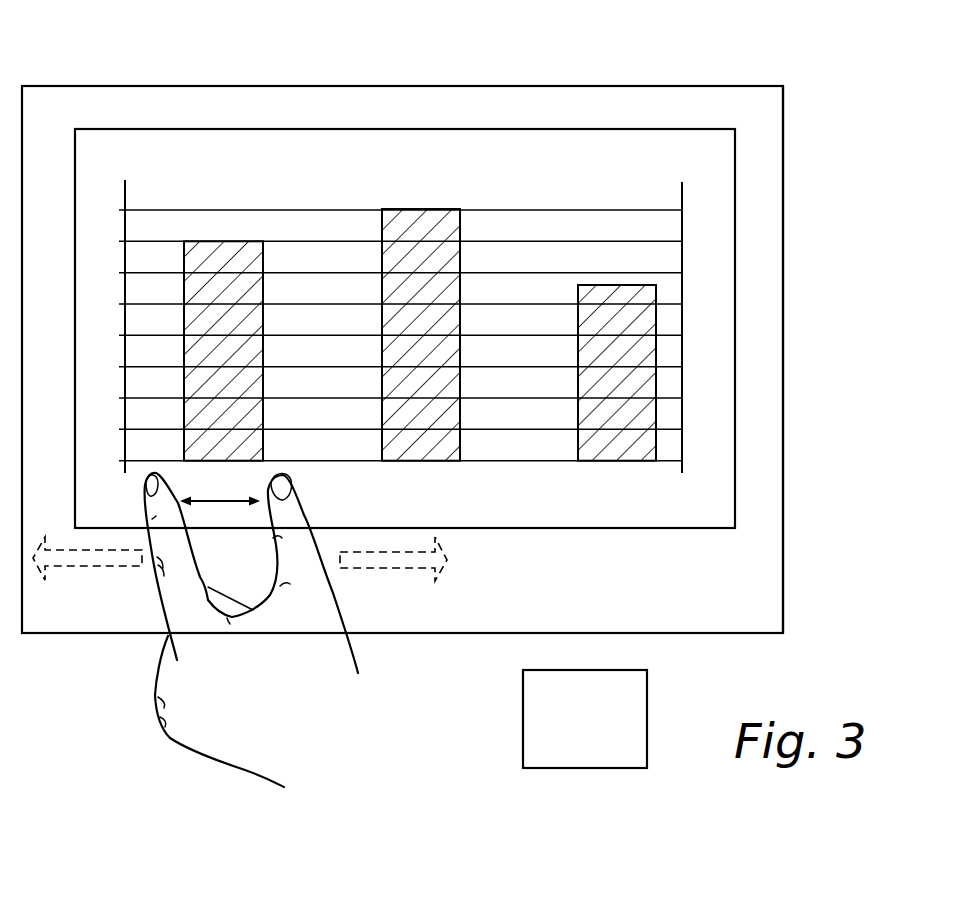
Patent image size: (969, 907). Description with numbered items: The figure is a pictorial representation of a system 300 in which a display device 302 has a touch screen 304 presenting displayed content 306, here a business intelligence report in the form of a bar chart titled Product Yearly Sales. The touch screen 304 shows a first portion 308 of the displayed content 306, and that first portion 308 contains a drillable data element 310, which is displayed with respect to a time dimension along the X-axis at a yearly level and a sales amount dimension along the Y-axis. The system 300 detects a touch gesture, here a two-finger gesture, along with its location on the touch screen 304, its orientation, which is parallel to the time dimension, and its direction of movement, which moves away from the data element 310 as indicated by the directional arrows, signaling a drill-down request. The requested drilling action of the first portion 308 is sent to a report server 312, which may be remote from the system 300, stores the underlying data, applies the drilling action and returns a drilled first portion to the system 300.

The system 300 is at (850, 124).
The display device 302 is at (117, 86).
The touch screen 304 is at (784, 359).
The displayed content 306 is at (656, 118).
The first portion 308 is at (195, 172).
The drillable data element 310 is at (225, 240).
The report server 312 is at (523, 707).